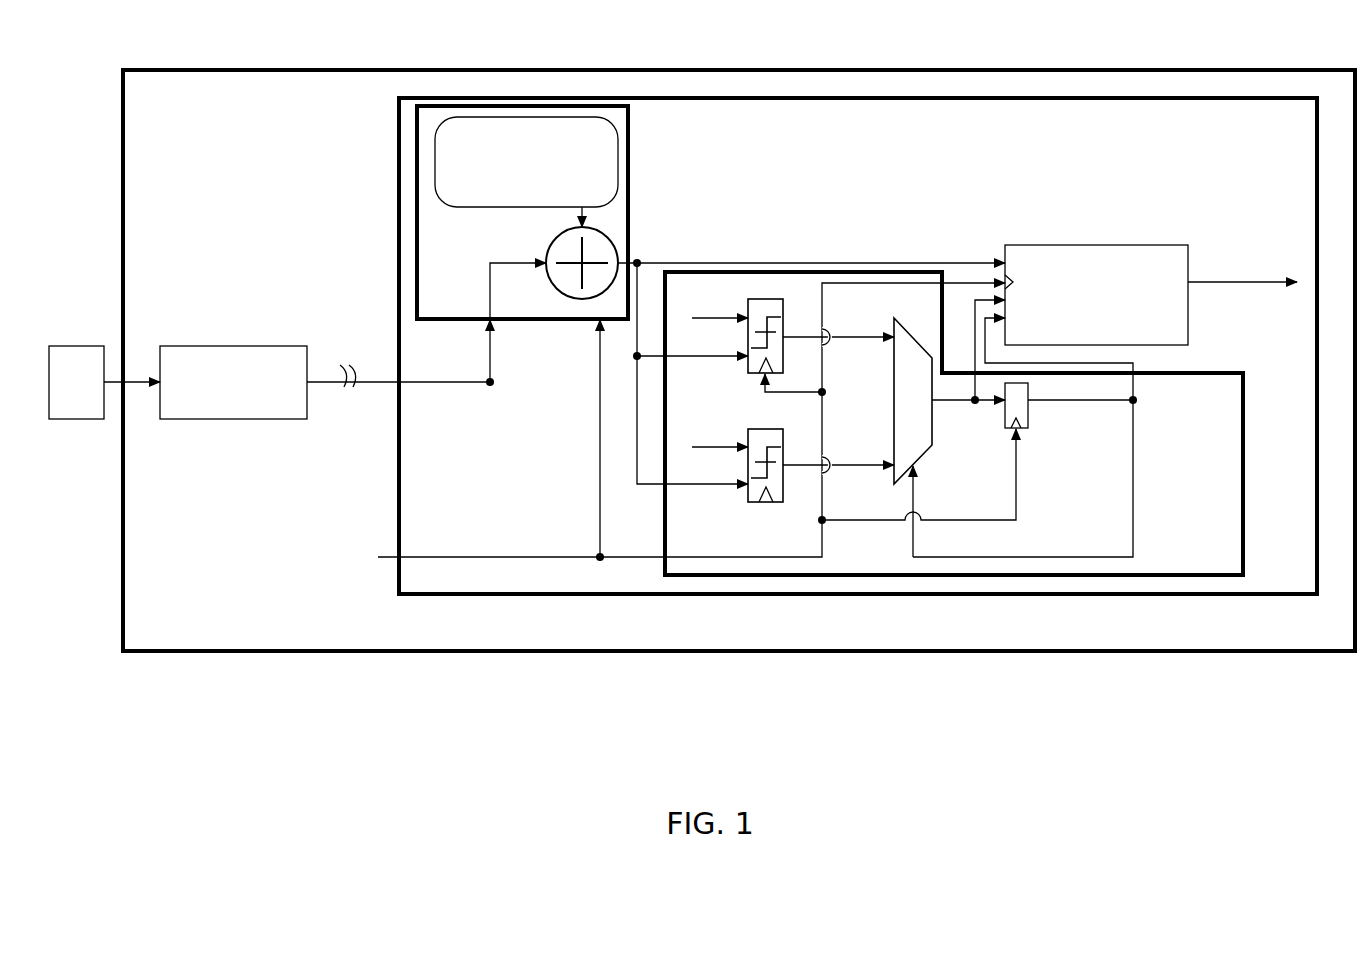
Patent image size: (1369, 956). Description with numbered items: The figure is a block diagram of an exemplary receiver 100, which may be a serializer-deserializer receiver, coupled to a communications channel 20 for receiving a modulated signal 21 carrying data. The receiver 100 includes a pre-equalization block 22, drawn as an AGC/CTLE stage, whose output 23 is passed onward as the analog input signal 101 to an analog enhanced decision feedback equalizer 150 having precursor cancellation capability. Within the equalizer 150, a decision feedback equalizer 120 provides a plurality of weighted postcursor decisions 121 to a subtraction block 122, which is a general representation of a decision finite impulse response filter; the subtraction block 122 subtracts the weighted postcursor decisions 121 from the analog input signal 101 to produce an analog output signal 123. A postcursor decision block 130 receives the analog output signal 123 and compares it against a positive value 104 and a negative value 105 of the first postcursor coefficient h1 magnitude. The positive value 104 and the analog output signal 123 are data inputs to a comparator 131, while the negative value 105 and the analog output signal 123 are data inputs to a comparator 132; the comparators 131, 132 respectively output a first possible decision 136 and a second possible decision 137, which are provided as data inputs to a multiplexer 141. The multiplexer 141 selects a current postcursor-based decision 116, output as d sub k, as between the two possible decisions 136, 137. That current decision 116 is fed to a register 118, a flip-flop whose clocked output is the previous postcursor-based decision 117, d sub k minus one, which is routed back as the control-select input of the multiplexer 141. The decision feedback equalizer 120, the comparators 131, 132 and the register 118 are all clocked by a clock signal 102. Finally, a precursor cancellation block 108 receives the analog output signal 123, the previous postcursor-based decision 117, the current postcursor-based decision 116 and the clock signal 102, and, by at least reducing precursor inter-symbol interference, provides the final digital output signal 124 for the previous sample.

The receiver 100 is at (936, 68).
The communications channel 20 is at (77, 345).
The modulated signal 21 is at (135, 374).
The pre-equalization block 22 is at (265, 420).
The equalized signal 23 is at (321, 379).
The analog enhanced decision feedback equalizer 150 is at (397, 578).
The analog input signal 101 is at (487, 390).
The clock signal 102 is at (378, 555).
The decision feedback equalizer 120 is at (630, 168).
The weighted postcursor decisions 121 is at (500, 208).
The subtraction block 122 is at (546, 248).
The analog output signal 123 is at (637, 262).
The postcursor decision block 130 is at (665, 520).
The positive value of coefficient h1 104 is at (738, 311).
The negative value of coefficient h1 105 is at (738, 440).
The comparator 131 is at (743, 372).
The comparator 132 is at (743, 502).
The first possible decision 136 is at (862, 342).
The second possible decision 137 is at (860, 470).
The multiplexer 141 is at (890, 482).
The current postcursor-based decision 116 is at (950, 405).
The register 118 is at (1031, 424).
The previous postcursor-based decision 117 is at (1138, 410).
The precursor cancellation block 108 is at (1070, 245).
The final digital output signal 124 is at (1210, 282).